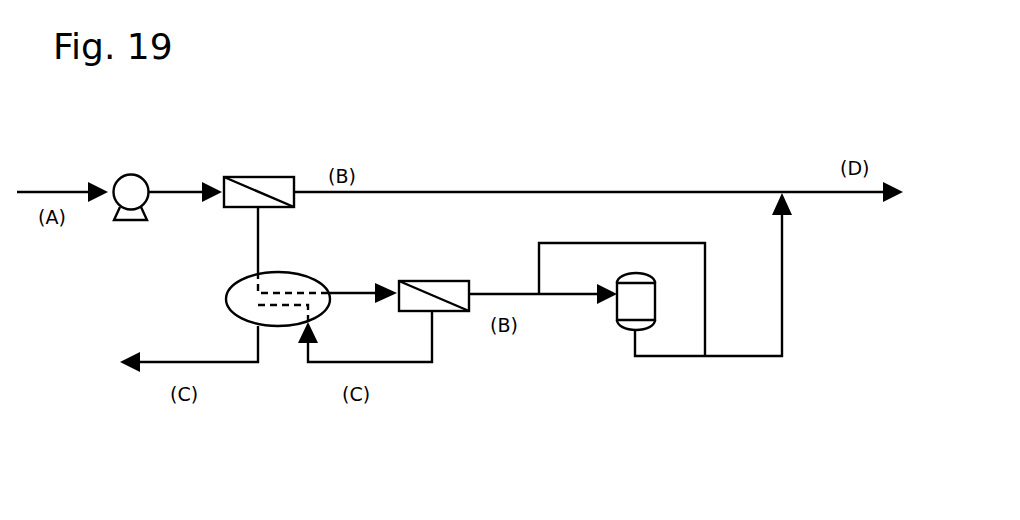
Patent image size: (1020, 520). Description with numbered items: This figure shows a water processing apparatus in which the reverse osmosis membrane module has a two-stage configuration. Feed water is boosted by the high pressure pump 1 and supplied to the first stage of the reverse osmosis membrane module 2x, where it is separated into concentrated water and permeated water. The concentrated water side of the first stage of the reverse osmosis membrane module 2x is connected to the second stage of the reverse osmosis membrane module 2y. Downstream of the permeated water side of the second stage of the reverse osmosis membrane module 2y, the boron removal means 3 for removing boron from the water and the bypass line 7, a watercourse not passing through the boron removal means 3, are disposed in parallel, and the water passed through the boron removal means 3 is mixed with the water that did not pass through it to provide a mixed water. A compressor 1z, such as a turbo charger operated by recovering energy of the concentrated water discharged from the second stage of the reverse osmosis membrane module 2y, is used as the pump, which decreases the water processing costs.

The high pressure pump 1 is at (138, 177).
The first stage of the reverse osmosis membrane module 2x is at (247, 174).
The second stage of the reverse osmosis membrane module 2y is at (427, 280).
The compressor 1z is at (228, 297).
The bypass line 7 is at (622, 289).
The boron removal means 3 is at (617, 333).